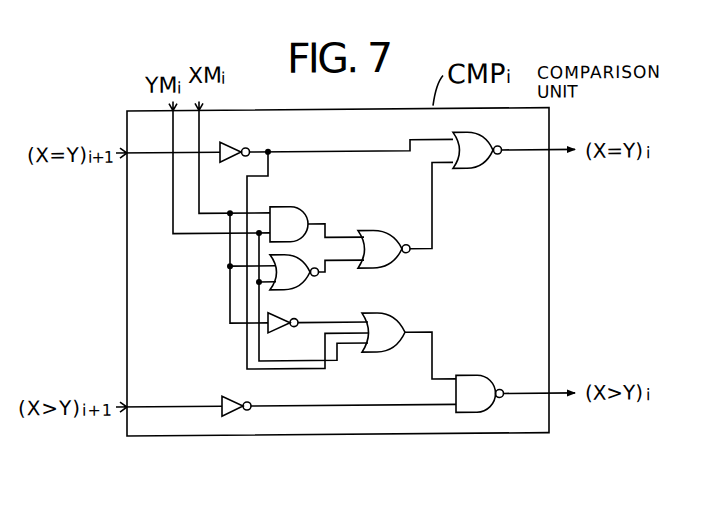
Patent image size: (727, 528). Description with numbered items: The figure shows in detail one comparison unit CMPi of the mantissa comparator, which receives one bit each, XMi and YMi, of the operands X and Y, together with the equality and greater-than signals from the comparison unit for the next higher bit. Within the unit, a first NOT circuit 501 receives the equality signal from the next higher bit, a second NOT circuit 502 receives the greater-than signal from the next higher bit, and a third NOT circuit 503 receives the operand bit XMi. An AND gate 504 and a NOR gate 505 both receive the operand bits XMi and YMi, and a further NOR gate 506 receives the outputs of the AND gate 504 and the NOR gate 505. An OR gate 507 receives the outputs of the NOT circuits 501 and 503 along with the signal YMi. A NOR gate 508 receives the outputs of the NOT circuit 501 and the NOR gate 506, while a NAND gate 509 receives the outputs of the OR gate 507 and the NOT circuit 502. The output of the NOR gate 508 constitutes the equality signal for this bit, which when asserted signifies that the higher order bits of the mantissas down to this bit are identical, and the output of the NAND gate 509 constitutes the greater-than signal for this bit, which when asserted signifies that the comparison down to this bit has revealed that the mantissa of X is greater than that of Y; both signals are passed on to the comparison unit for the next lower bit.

The NOT circuit 501 is at (233, 144).
The NOT circuit 502 is at (231, 397).
The NOT circuit 503 is at (284, 335).
The AND gate 504 is at (280, 207).
The NOR gate 505 is at (305, 290).
The NOR gate 506 is at (363, 232).
The OR gate 507 is at (411, 306).
The NOR gate 508 is at (491, 123).
The NAND gate 509 is at (482, 378).